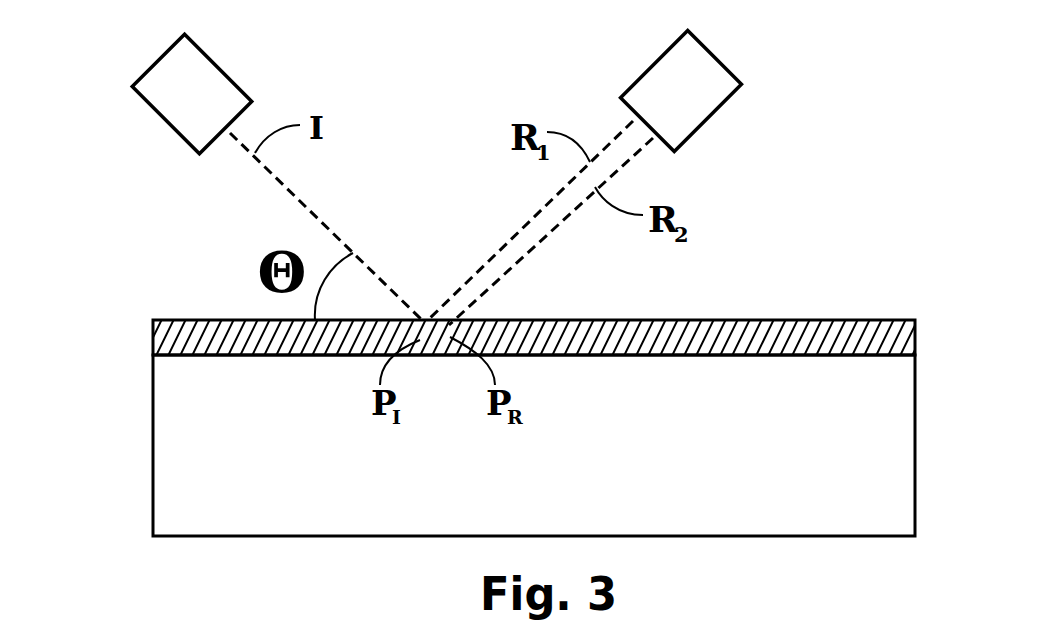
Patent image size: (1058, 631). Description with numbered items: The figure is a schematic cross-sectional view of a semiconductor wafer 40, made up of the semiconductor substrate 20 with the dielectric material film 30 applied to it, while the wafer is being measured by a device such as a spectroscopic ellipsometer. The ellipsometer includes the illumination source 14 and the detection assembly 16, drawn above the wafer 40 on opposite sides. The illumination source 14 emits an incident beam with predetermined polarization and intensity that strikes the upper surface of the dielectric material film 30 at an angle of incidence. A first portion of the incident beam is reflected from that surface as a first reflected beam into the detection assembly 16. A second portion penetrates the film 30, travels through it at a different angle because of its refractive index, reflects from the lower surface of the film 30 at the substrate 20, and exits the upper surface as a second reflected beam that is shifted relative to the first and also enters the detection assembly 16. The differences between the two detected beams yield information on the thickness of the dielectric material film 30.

The illumination source 14 is at (192, 94).
The detection assembly 16 is at (681, 91).
The semiconductor substrate 20 is at (534, 445).
The dielectric material film 30 is at (153, 335).
The semiconductor wafer 40 is at (491, 368).